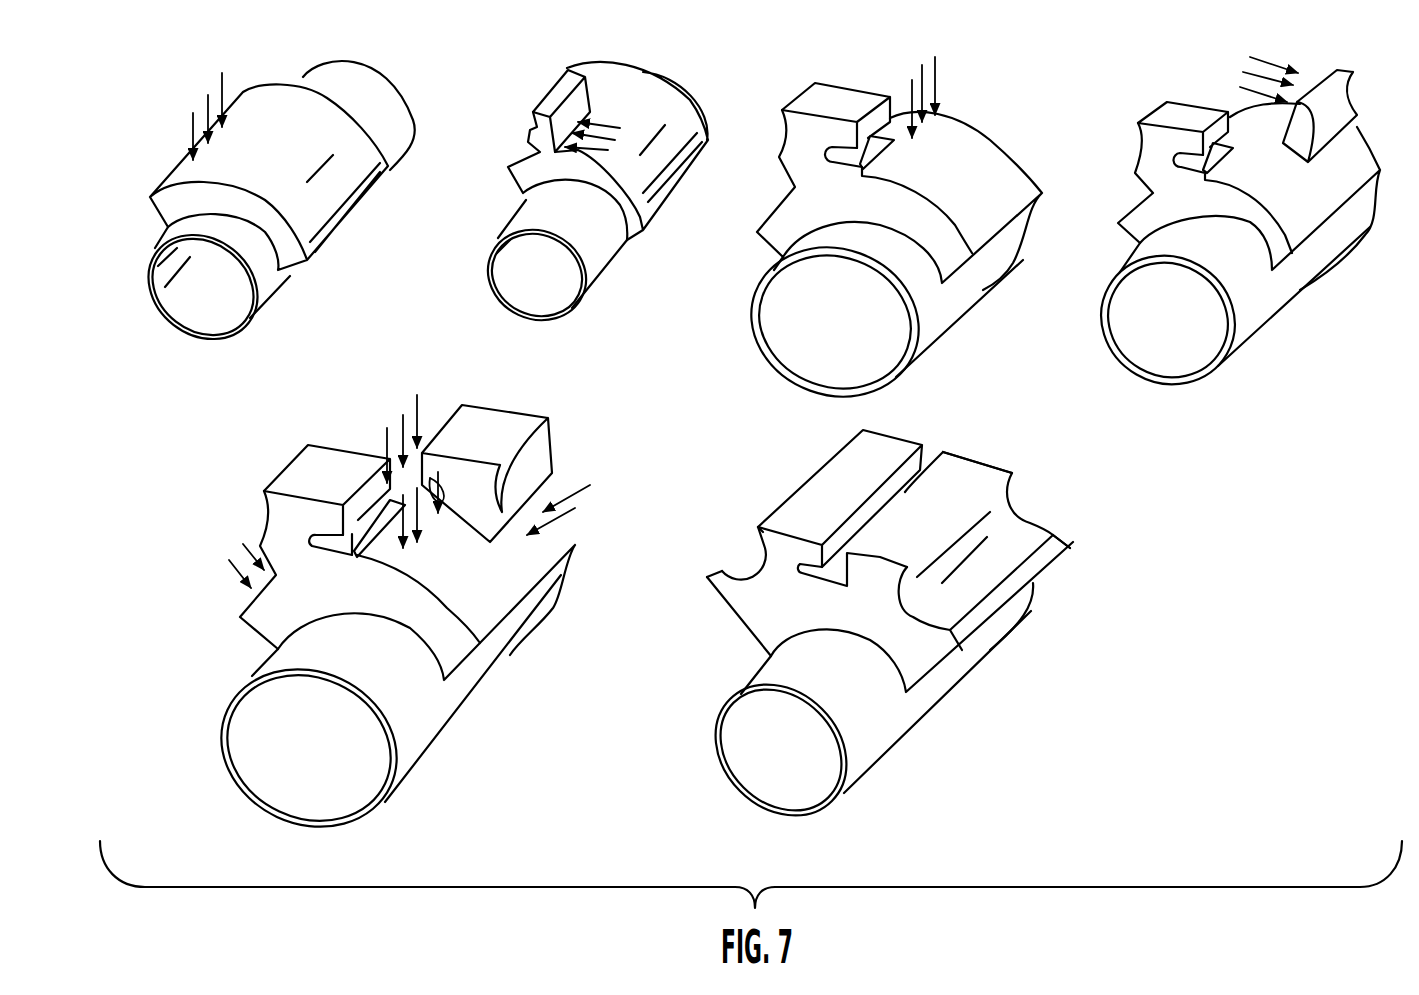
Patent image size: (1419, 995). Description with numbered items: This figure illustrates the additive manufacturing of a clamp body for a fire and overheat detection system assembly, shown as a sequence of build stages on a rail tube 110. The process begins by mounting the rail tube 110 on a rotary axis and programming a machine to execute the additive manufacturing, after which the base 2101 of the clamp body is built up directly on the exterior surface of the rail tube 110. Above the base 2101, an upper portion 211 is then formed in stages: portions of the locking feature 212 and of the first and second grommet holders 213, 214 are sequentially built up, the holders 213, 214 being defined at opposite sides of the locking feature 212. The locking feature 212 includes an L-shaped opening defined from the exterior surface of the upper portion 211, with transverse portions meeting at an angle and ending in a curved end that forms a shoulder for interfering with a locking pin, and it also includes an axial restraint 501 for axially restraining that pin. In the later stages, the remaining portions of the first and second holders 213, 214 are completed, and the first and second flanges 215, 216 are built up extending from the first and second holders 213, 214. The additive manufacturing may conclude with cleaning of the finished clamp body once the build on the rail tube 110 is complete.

The rail tube 110 is at (180, 308).
The base 2101 is at (273, 223).
The upper portion 211 is at (545, 95).
The locking feature 212 is at (868, 145).
The first grommet holder 213 is at (280, 529).
The second grommet holder 214 is at (535, 462).
The first flange 215 is at (733, 549).
The second flange 216 is at (1017, 587).
The axial restraint 501 is at (960, 487).